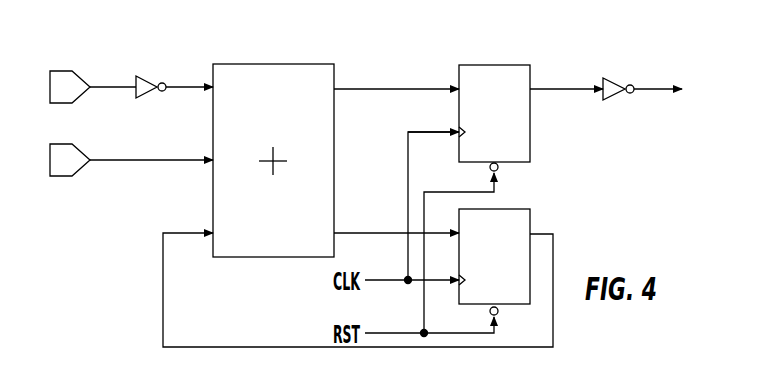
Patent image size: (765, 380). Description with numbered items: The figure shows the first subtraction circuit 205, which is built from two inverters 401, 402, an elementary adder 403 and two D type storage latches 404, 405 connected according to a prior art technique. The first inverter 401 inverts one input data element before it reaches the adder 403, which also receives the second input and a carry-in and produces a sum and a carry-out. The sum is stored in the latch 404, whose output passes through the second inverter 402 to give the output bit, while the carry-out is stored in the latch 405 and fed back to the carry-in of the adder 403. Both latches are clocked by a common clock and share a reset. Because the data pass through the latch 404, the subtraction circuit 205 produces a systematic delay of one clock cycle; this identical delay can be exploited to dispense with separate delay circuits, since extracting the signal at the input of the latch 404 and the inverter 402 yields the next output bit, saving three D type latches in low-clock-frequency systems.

The first subtraction circuit 205 is at (108, 207).
The inverter 401 is at (148, 76).
The inverter 402 is at (612, 80).
The elementary adder 403 is at (268, 64).
The D type storage latch 404 is at (530, 123).
The D type storage latch 405 is at (530, 218).